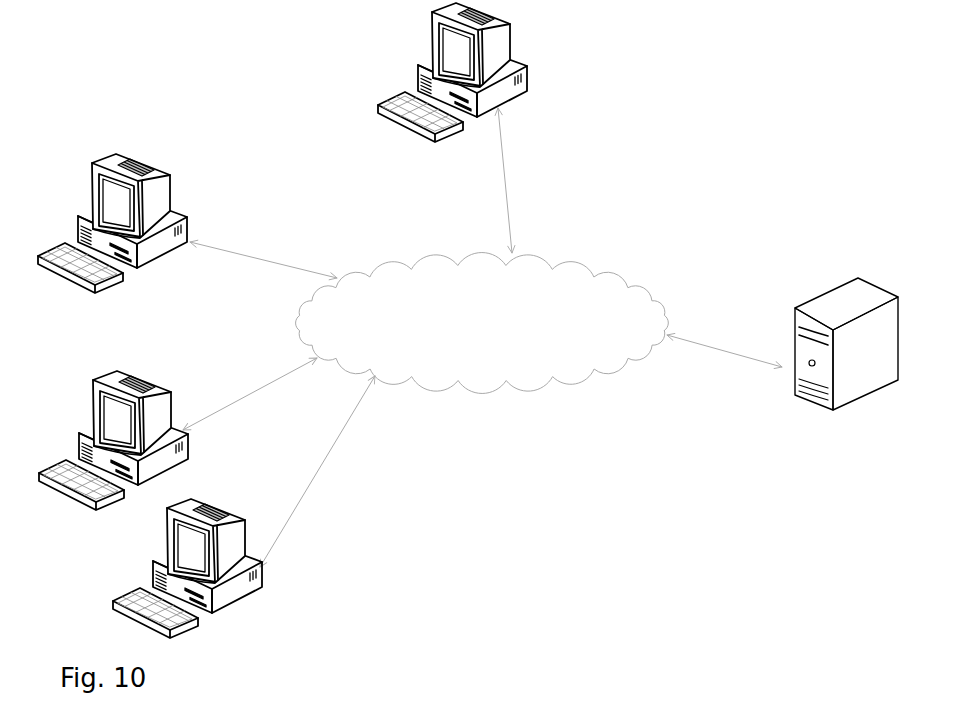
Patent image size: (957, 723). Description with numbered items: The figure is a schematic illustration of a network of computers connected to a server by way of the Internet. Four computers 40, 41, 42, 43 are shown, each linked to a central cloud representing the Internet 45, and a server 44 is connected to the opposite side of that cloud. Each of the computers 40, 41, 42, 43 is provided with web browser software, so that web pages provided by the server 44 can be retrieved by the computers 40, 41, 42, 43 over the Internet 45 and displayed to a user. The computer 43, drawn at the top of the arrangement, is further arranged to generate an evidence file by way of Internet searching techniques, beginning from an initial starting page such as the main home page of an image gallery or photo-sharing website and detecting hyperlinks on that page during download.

The computer 40 is at (167, 178).
The computer 41 is at (78, 433).
The computer 42 is at (227, 590).
The computer 43 is at (527, 82).
The server 44 is at (822, 406).
The Internet 45 is at (480, 388).